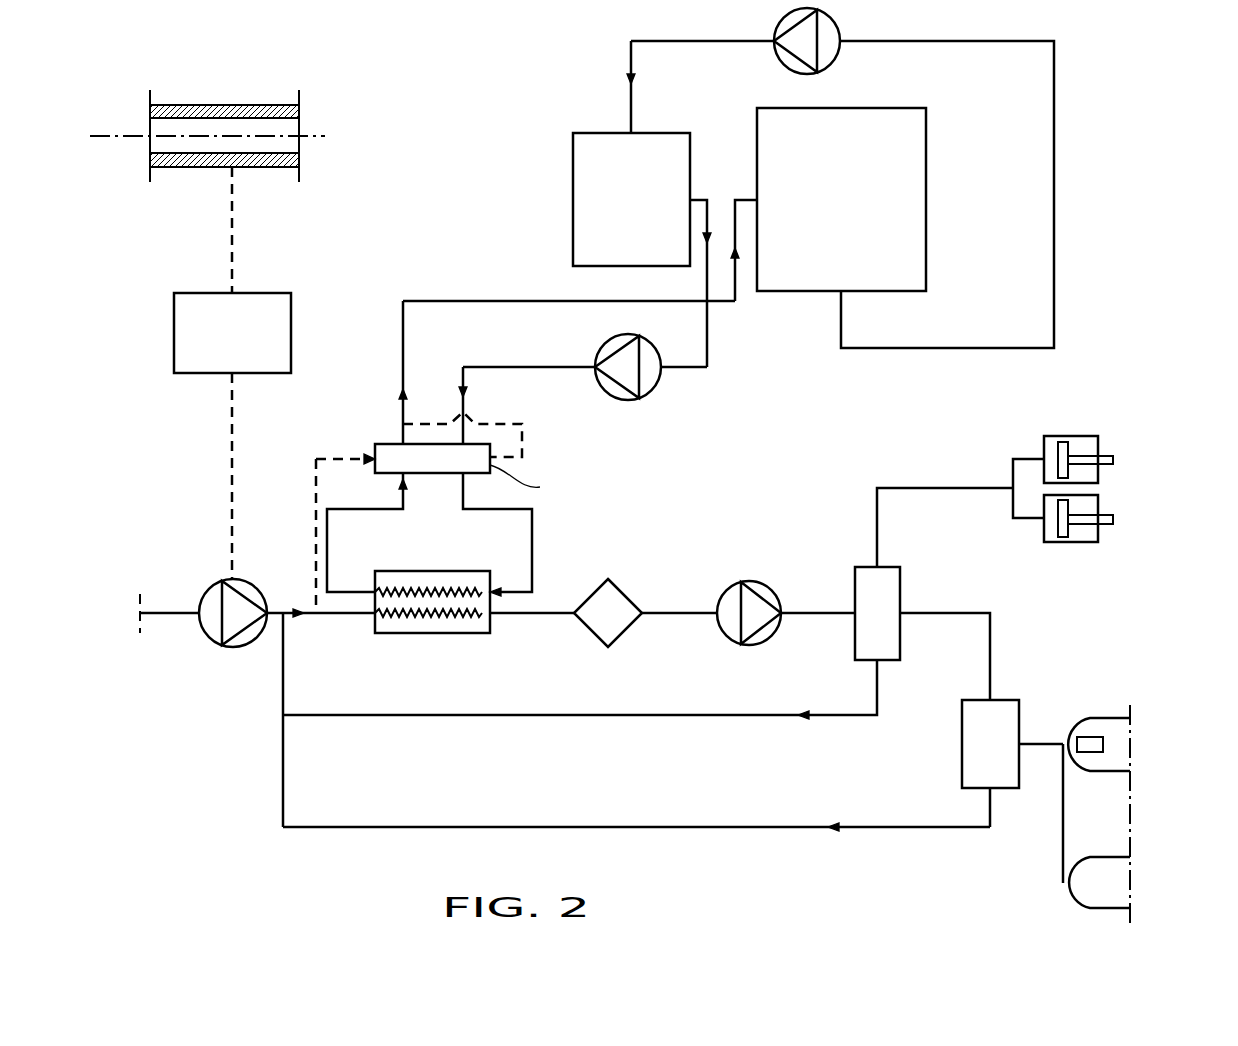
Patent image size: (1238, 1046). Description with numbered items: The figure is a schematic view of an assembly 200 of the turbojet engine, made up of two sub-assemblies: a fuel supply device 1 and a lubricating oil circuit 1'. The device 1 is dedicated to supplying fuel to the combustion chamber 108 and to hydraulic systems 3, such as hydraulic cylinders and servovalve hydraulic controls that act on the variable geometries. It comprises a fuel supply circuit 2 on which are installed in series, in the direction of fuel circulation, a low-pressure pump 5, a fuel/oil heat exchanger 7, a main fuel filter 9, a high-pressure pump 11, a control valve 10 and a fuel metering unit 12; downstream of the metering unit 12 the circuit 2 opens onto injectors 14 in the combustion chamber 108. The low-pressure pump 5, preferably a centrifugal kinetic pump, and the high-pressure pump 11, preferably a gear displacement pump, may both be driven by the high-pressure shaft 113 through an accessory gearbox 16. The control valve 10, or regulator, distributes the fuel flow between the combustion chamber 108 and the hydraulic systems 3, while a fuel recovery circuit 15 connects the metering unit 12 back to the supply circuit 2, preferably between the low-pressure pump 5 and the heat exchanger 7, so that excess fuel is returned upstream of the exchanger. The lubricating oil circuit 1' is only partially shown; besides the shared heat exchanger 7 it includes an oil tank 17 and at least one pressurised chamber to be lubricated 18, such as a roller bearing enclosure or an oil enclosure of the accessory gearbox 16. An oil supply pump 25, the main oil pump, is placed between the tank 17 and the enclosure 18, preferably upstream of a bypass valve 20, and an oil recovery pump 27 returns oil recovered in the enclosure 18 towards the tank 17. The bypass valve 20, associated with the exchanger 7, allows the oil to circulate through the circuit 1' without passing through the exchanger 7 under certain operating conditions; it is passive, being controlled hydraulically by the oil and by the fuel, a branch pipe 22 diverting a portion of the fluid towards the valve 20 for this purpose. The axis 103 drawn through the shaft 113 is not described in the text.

The fuel supply device 1 is at (1150, 814).
The lubricating oil circuit 1' is at (1005, 240).
The fuel supply circuit 2 is at (1018, 672).
The hydraulic systems 3 is at (1072, 432).
The low-pressure pump 5 is at (212, 632).
The fuel/oil heat exchanger 7 is at (432, 636).
The main fuel filter 9 is at (622, 590).
The control valve 10 is at (903, 593).
The high-pressure pump 11 is at (765, 590).
The fuel metering unit 12 is at (1003, 727).
The injectors 14 is at (1090, 737).
The fuel recovery circuit 15 is at (412, 827).
The accessory gearbox 16 is at (263, 305).
The oil tank 17 is at (657, 143).
The pressurised chamber to be lubricated 18 is at (905, 207).
The bypass valve 20 is at (375, 447).
The branch pipe 22 is at (316, 528).
The oil supply pump 25 is at (660, 385).
The oil recovery pump 27 is at (845, 62).
The axis 103 is at (118, 136).
The combustion chamber 108 is at (1080, 885).
The high-pressure shaft 113 is at (210, 110).
The assembly 200 is at (1078, 96).